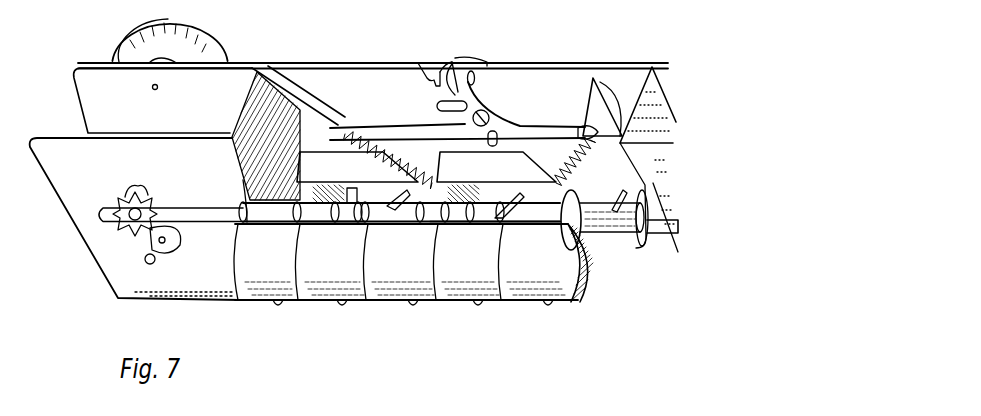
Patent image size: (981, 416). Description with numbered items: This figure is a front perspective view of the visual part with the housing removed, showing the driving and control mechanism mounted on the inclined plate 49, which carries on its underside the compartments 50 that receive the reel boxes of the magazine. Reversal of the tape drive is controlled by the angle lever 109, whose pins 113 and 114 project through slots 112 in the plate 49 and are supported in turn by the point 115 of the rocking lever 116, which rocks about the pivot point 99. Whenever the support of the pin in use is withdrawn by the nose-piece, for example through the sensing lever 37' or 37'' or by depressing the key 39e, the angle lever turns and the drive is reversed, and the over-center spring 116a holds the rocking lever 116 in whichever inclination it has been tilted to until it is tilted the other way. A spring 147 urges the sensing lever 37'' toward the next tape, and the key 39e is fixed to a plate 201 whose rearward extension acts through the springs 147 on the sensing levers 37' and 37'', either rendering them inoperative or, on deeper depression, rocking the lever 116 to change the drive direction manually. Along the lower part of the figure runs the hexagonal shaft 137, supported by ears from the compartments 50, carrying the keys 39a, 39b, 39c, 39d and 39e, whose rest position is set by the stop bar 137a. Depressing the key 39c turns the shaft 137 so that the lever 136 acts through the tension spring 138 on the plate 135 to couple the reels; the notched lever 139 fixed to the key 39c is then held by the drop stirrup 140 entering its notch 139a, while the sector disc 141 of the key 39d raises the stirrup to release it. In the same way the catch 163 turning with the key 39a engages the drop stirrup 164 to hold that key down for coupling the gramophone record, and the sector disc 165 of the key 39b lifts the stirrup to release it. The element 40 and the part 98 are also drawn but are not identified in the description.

The hand knob 40 is at (116, 36).
The compartments 50 is at (64, 102).
The sensing lever 37' is at (288, 111).
The plate 49 is at (318, 62).
The slots 112 is at (423, 63).
The point 115 is at (453, 61).
The angle lever 109 is at (482, 60).
The sensing lever 37'' is at (596, 81).
The pin 114 is at (426, 86).
The pin 113 is at (476, 78).
The rocking lever 116 is at (384, 137).
The pin 98 is at (437, 106).
The pivot point 99 is at (493, 116).
The spring 116a is at (498, 145).
The spring 147 is at (416, 177).
The notch 139a is at (460, 183).
The catch 163 is at (316, 183).
The stop bar 137a is at (599, 206).
The plate 201 is at (594, 241).
The tension spring 138 is at (118, 232).
The lever 136 is at (148, 258).
The plate 135 is at (166, 256).
The hexagonal shaft 137 is at (221, 212).
The key 39a is at (290, 270).
The key 39b is at (338, 270).
The key 39c is at (395, 275).
The key 39d is at (470, 280).
The key 39e is at (537, 280).
The drop stirrup 164 is at (335, 210).
The sector disc 165 is at (363, 215).
The notched lever 139 is at (432, 215).
The drop stirrup 140 is at (468, 225).
The sector disc 141 is at (500, 225).